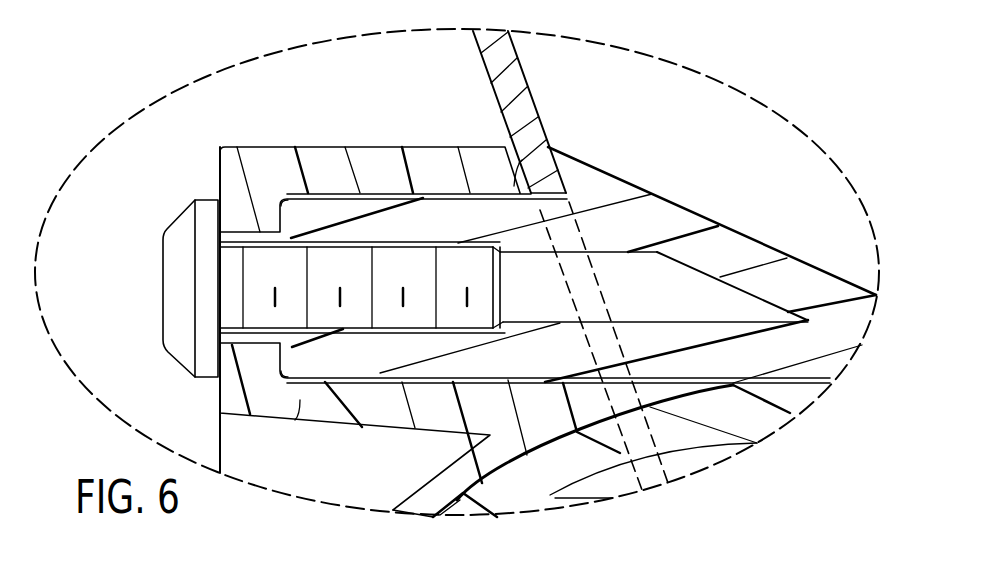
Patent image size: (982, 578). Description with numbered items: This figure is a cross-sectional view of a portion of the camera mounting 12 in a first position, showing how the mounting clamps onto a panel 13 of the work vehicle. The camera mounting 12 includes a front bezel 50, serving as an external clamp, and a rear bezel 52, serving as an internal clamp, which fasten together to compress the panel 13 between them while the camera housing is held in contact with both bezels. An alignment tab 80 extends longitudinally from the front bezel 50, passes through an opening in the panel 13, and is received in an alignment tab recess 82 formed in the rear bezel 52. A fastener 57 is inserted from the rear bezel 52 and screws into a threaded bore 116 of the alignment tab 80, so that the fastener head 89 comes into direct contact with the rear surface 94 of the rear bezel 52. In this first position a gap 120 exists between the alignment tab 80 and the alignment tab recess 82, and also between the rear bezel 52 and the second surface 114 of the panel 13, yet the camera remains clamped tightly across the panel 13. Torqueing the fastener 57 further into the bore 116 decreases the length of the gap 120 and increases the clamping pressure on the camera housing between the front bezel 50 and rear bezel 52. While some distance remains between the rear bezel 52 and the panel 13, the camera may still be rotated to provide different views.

The camera mounting 12 is at (181, 44).
The panel 13 is at (651, 478).
The front bezel 50 is at (662, 213).
The rear bezel 52 is at (258, 472).
The fastener 57 is at (360, 263).
The alignment tab 80 is at (440, 365).
The alignment tab recess 82 is at (348, 384).
The fastener head 89 is at (185, 335).
The rear surface 94 is at (217, 219).
The second surface 114 is at (488, 56).
The bore 116 is at (658, 291).
The gap 120 is at (287, 202).